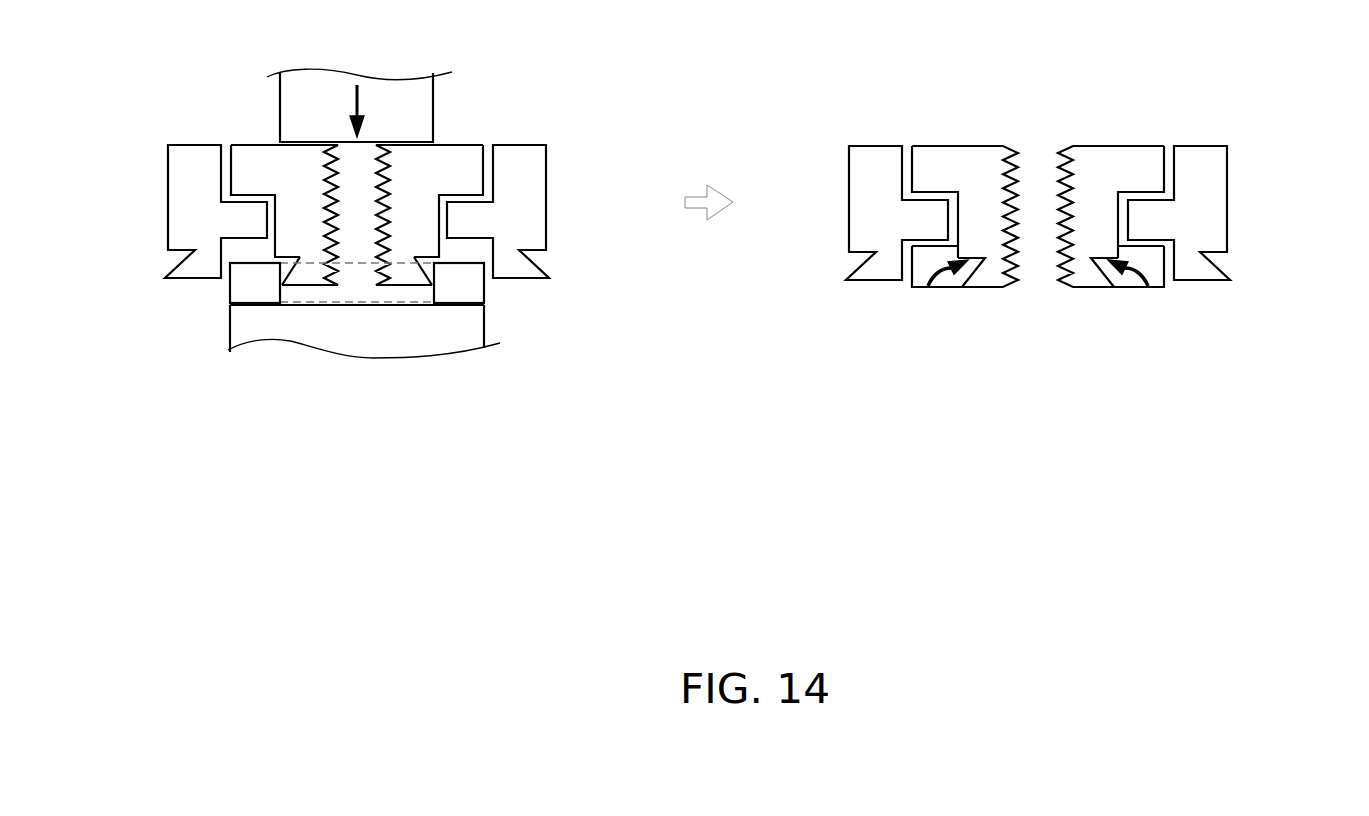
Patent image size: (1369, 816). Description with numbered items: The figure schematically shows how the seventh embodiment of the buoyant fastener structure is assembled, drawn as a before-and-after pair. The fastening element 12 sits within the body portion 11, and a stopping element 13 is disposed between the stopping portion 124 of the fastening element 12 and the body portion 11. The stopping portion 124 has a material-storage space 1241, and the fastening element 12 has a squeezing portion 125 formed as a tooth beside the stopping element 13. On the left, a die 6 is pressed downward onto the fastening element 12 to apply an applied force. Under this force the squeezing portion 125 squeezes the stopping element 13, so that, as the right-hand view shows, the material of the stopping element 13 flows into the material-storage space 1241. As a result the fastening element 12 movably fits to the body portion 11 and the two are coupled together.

The pressing tool 6 is at (423, 110).
The body portion 11 is at (560, 176).
The fastening element 12 is at (252, 139).
The stopping element 13 is at (457, 290).
The stopping portion 124 is at (400, 288).
The material-storage space 1241 is at (278, 262).
The squeezing portion 125 is at (278, 262).